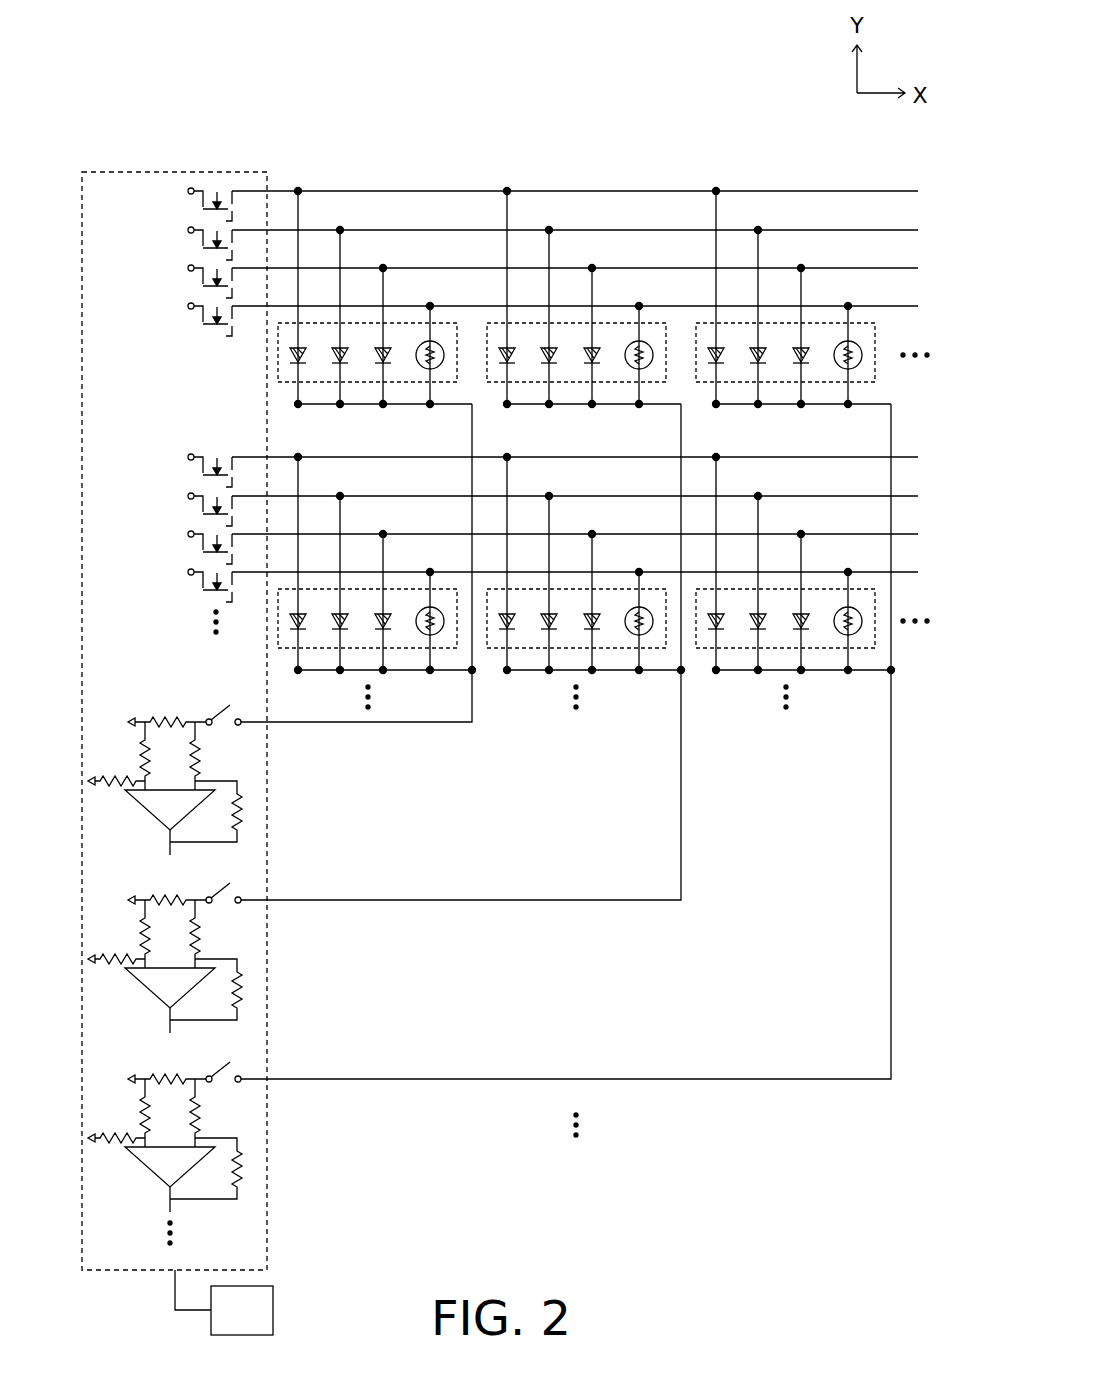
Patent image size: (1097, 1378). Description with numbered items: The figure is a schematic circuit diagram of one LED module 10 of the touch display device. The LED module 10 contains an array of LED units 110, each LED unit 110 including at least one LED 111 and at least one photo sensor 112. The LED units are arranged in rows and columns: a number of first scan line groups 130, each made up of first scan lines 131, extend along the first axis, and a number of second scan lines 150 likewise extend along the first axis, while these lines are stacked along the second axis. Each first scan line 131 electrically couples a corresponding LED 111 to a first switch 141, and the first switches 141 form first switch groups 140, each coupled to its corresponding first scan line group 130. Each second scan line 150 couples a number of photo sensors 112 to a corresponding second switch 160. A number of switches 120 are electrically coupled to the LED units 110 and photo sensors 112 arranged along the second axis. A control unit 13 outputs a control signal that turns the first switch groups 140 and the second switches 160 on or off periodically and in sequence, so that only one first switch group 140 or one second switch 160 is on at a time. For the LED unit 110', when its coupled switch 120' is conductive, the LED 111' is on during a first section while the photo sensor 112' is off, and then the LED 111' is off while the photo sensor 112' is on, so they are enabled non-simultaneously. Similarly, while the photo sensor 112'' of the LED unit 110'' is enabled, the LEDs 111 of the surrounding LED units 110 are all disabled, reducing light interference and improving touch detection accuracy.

The LED module 10 is at (635, 69).
The control unit 13 is at (229, 1324).
The LED unit 110 is at (813, 298).
The LED unit 110' is at (334, 272).
The LED unit 110'' is at (622, 600).
The LED 111 is at (561, 242).
The LED 111' is at (316, 283).
The photo sensor 112 is at (652, 248).
The photo sensor 112' is at (462, 244).
The photo sensor 112'' is at (621, 670).
The switch 120 is at (214, 937).
The switch 120' is at (219, 780).
The first scan line group 130 is at (348, 245).
The first scan line 131 is at (383, 267).
The first switch group 140 is at (149, 192).
The first switch 141 is at (182, 267).
The second scan line 150 is at (690, 310).
The second switch 160 is at (178, 317).